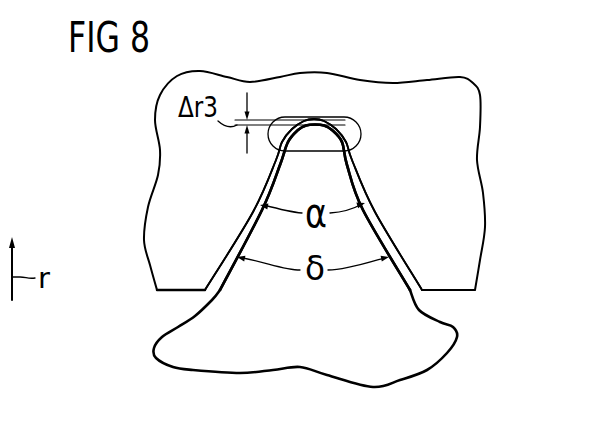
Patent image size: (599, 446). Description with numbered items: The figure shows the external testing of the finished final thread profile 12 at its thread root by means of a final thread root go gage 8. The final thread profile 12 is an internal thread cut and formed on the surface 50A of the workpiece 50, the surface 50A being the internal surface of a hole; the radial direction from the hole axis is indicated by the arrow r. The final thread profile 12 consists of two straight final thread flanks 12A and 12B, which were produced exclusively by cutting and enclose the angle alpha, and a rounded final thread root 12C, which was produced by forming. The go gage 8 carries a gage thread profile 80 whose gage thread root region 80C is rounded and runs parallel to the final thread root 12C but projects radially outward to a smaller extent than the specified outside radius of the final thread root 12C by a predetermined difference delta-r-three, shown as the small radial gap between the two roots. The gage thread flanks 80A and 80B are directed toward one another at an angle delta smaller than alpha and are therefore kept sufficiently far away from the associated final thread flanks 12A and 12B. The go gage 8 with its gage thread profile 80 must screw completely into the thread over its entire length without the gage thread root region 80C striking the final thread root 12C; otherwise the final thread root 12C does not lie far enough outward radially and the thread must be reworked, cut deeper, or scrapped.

The final thread root go gage 8 is at (323, 340).
The final thread profile 12 is at (440, 176).
The final thread flank 12A is at (258, 184).
The final thread flank 12B is at (377, 196).
The final thread root 12C is at (330, 118).
The workpiece 50 is at (467, 94).
The surface of the workpiece 50A is at (163, 291).
The gage thread profile 80 is at (365, 285).
The gage thread flank 80A is at (243, 247).
The gage thread flank 80B is at (380, 232).
The gage thread root region 80C is at (318, 124).